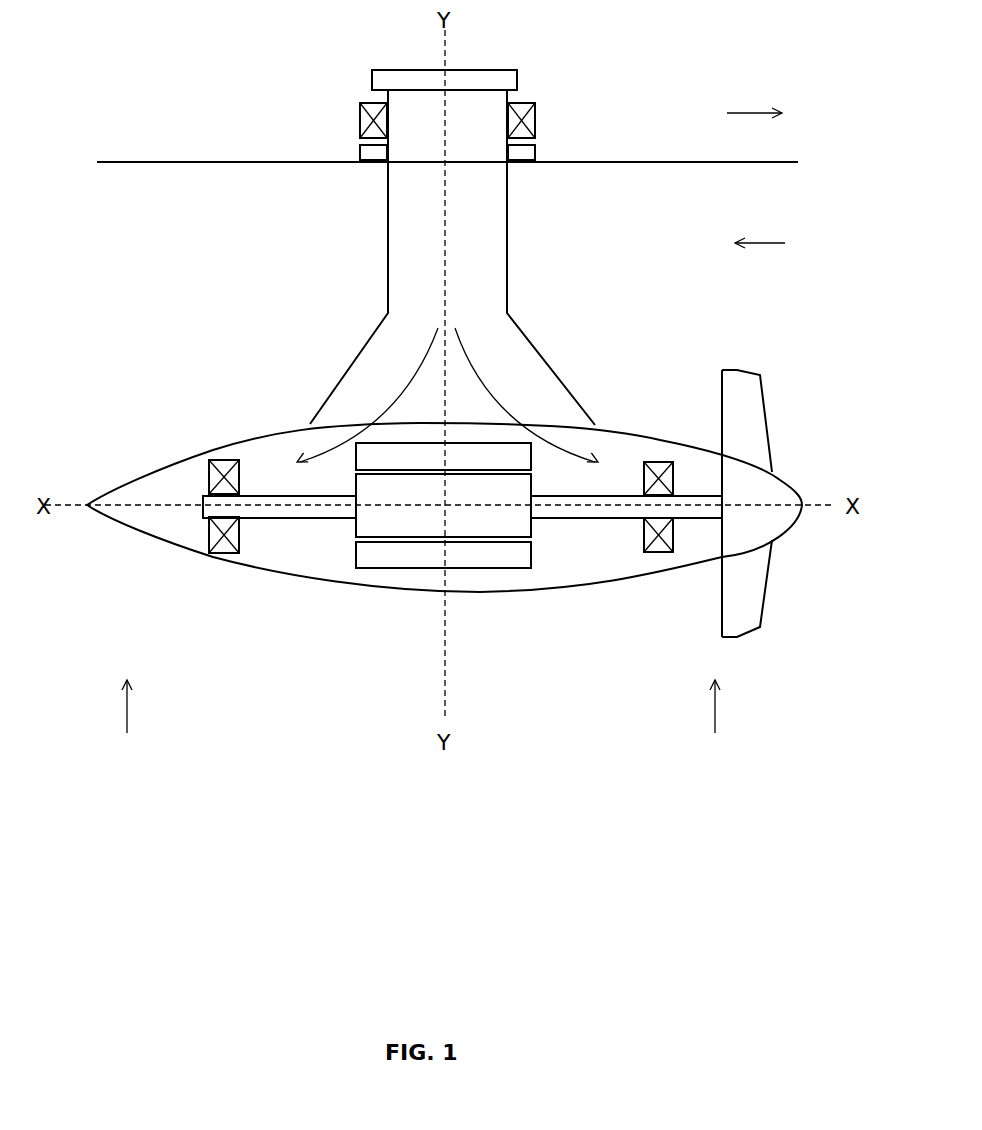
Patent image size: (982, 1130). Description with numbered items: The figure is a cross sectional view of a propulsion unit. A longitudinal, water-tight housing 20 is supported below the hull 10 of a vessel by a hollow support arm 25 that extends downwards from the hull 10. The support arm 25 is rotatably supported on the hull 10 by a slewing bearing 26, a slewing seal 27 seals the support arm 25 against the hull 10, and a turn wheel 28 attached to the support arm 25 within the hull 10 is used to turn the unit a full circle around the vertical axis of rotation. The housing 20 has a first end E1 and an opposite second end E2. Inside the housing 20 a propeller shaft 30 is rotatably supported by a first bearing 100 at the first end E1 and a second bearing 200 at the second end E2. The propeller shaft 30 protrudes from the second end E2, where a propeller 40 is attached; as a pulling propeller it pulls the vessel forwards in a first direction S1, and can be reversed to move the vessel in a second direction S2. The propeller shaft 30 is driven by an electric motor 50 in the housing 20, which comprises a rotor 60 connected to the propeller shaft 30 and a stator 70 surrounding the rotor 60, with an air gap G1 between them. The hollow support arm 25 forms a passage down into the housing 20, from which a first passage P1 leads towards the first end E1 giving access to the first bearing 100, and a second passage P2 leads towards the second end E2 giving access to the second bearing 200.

The hull 10 is at (613, 165).
The housing 20 is at (252, 382).
The support arm 25 is at (388, 247).
The slewing bearing 26 is at (532, 122).
The slewing seal 27 is at (530, 153).
The turn wheel 28 is at (376, 83).
The propeller shaft 30 is at (603, 510).
The propeller 40 is at (758, 427).
The motor 50 is at (341, 577).
The rotor 60 is at (387, 522).
The stator 70 is at (518, 557).
The first bearing 100 is at (220, 458).
The second bearing 200 is at (657, 460).
The air gap G1 is at (458, 537).
The first passage P1 is at (397, 390).
The second passage P2 is at (497, 390).
The first direction S1 is at (755, 108).
The second direction S2 is at (762, 240).
The first end E1 is at (134, 727).
The second end E2 is at (722, 727).